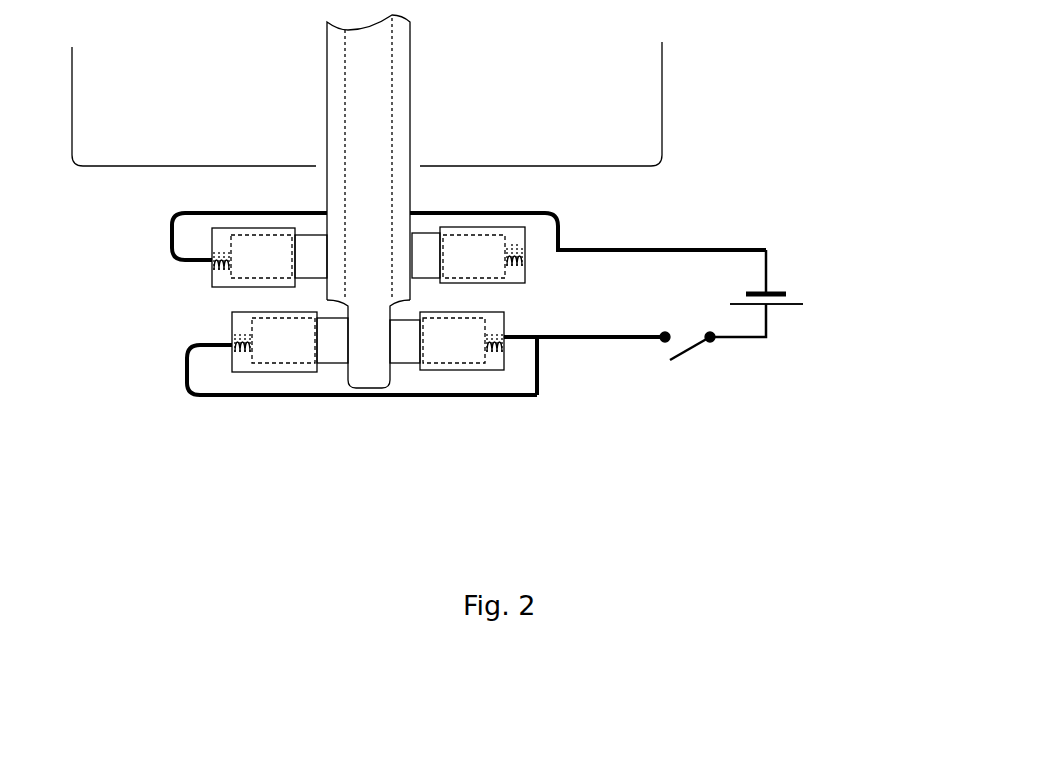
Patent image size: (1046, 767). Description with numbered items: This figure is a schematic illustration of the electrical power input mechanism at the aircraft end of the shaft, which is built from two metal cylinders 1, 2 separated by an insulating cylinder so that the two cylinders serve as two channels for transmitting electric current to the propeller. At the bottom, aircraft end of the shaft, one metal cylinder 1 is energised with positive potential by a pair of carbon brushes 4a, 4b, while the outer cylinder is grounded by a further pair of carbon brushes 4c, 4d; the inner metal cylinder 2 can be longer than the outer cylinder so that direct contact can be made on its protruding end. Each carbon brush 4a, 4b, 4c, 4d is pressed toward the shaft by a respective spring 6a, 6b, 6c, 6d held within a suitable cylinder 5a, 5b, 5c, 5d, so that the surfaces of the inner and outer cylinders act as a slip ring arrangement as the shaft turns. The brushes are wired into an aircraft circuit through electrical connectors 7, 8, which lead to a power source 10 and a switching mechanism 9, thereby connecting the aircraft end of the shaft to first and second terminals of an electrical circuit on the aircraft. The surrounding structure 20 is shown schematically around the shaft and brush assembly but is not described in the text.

The metal cylinder 1 is at (410, 96).
The metal cylinder 2 is at (370, 388).
The carbon brush 4a is at (407, 370).
The carbon brush 4b is at (258, 372).
The carbon brush 4c is at (416, 233).
The carbon brush 4d is at (262, 240).
The cylinder 5a is at (447, 370).
The cylinder 5b is at (297, 372).
The cylinder 5c is at (483, 226).
The cylinder 5d is at (212, 235).
The spring 6a is at (497, 355).
The spring 6b is at (215, 372).
The spring 6c is at (520, 245).
The spring 6d is at (215, 270).
The electrical connector 7 is at (556, 340).
The electrical connector 8 is at (766, 253).
The switching mechanism 9 is at (695, 355).
The power source 10 is at (808, 312).
The housing 20 is at (78, 75).